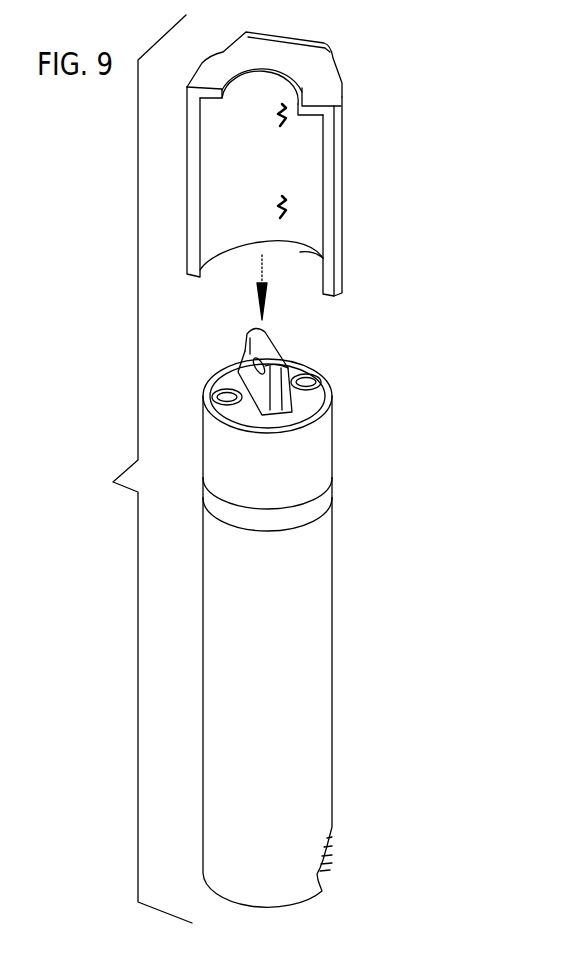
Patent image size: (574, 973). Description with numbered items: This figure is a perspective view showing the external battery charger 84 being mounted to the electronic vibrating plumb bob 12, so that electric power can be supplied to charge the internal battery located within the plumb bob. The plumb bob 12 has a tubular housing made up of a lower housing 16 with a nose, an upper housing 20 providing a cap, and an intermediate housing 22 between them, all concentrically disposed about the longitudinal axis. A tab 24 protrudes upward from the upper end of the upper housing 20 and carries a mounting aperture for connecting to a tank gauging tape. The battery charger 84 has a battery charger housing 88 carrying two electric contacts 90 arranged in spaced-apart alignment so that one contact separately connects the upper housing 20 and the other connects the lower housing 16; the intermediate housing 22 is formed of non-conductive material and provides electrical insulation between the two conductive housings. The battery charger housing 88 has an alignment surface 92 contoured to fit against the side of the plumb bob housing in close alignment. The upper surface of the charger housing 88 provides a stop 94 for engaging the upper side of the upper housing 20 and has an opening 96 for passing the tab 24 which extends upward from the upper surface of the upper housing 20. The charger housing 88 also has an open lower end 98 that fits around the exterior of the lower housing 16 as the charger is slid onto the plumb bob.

The plumb bob 12 is at (385, 535).
The lower housing 16 is at (330, 707).
The upper housing 20 is at (313, 442).
The intermediate housing 22 is at (317, 507).
The tab 24 is at (248, 350).
The external battery charger 84 is at (350, 66).
The battery charger housing 88 is at (337, 173).
The electric contacts 90 is at (284, 115).
The alignment surface 92 is at (232, 178).
The stop 94 is at (252, 60).
The opening 96 is at (252, 72).
The open lower end 98 is at (297, 270).